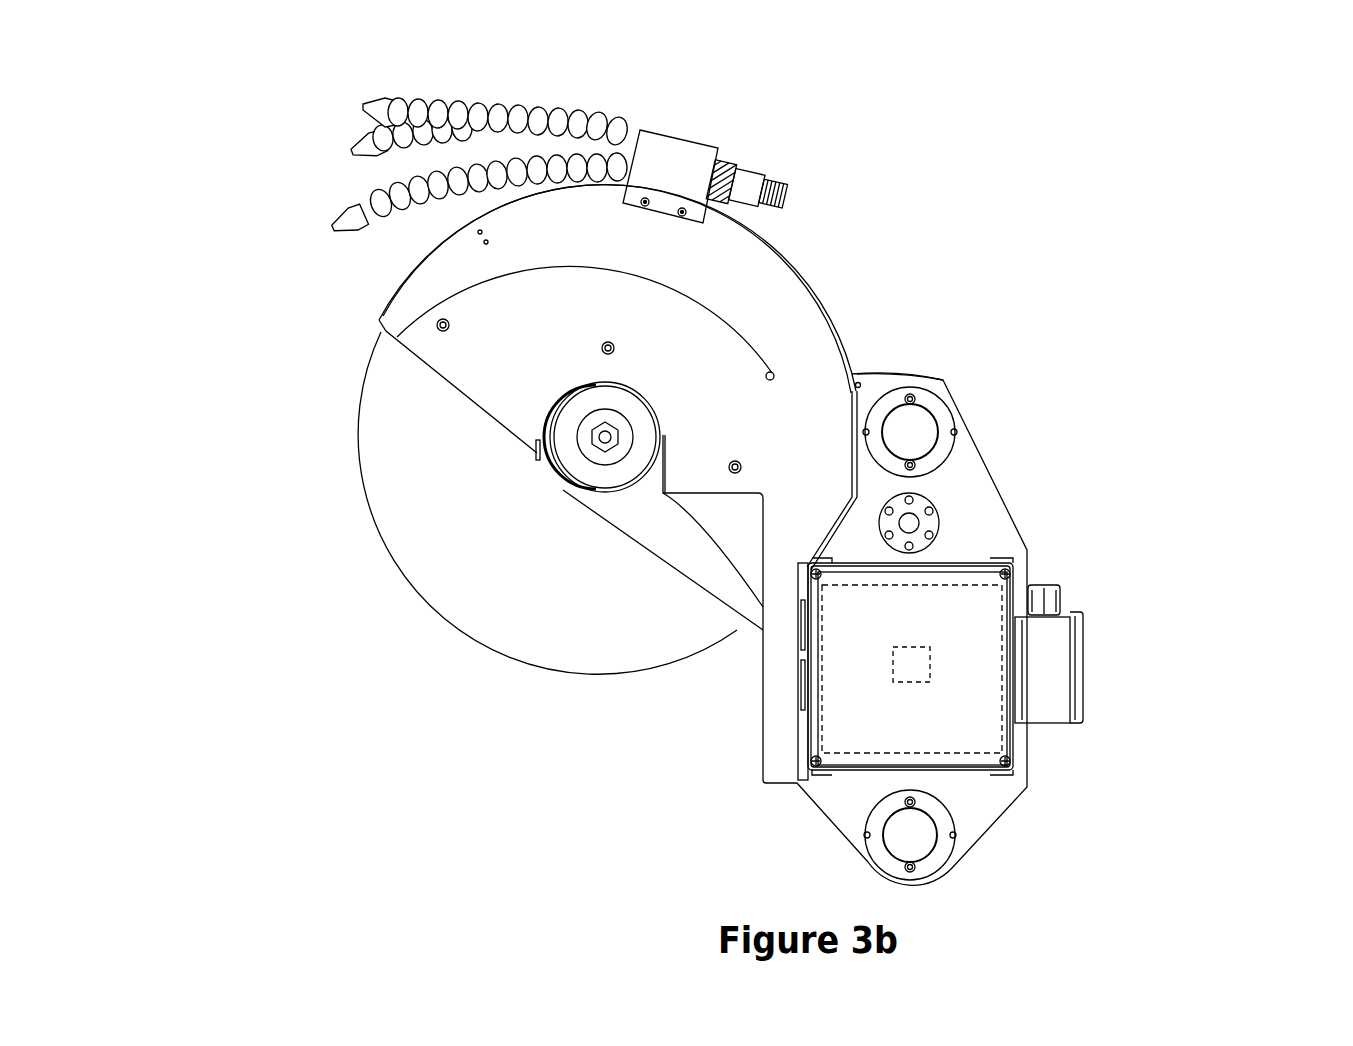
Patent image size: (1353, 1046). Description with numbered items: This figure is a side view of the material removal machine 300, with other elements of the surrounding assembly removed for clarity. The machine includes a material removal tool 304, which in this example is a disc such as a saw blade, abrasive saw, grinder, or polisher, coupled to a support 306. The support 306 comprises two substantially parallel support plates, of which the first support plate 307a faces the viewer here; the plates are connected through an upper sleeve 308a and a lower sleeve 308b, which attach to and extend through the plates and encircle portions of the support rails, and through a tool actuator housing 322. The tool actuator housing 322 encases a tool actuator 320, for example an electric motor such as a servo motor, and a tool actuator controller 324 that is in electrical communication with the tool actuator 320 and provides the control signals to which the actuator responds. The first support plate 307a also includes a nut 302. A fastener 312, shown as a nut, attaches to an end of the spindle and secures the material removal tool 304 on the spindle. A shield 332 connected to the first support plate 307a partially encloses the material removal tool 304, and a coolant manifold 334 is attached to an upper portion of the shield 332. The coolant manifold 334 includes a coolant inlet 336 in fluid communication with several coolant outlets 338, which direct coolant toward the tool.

The material removal machine 300 is at (1274, 130).
The nut 302 is at (932, 507).
The material removal tool 304 is at (362, 463).
The support 306 is at (905, 363).
The first support plate 307a is at (970, 487).
The upper sleeve 308a is at (932, 407).
The lower sleeve 308b is at (948, 827).
The fastener 312 is at (630, 402).
The tool actuator 320 is at (908, 645).
The tool actuator housing 322 is at (812, 704).
The tool actuator controller 324 is at (1003, 670).
The shield 332 is at (400, 311).
The coolant manifold 334 is at (690, 152).
The coolant inlet 336 is at (797, 193).
The coolant outlets 338 is at (531, 158).